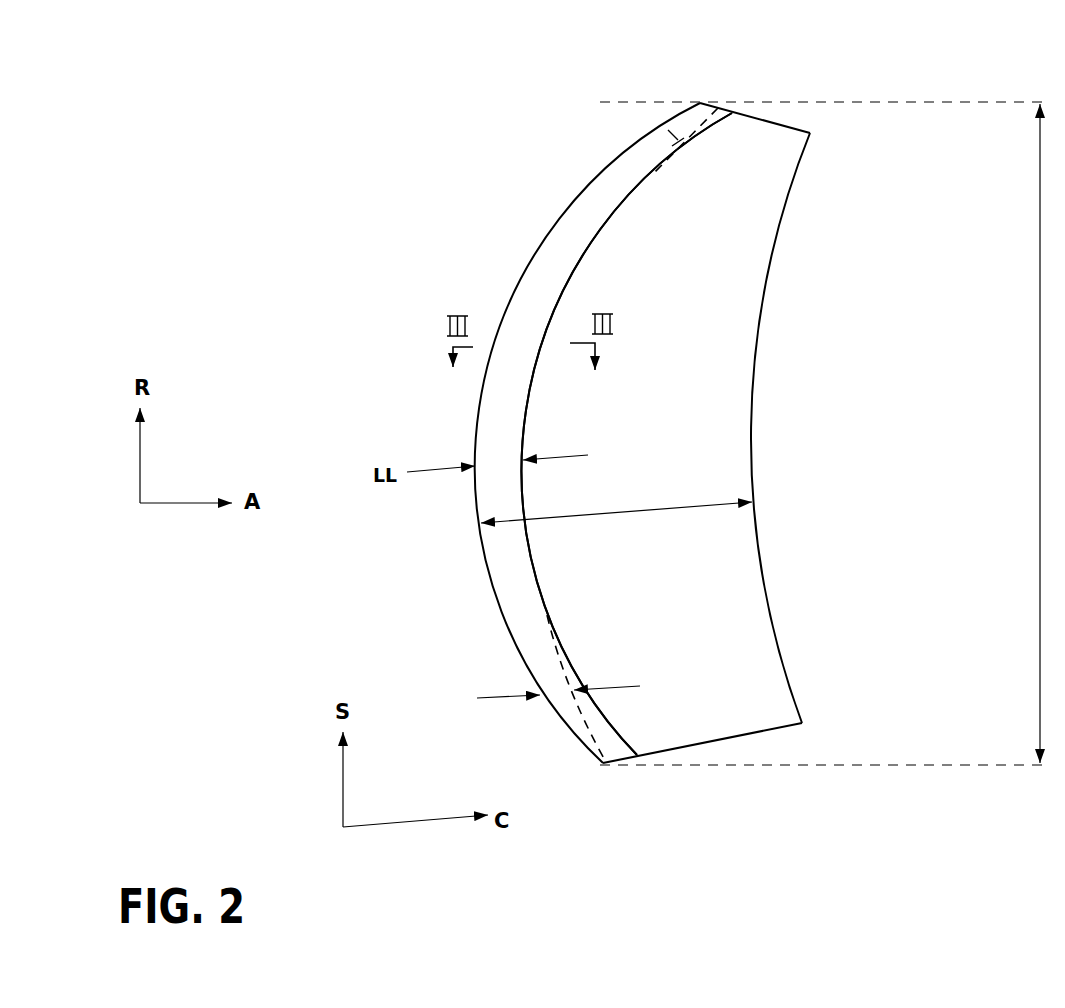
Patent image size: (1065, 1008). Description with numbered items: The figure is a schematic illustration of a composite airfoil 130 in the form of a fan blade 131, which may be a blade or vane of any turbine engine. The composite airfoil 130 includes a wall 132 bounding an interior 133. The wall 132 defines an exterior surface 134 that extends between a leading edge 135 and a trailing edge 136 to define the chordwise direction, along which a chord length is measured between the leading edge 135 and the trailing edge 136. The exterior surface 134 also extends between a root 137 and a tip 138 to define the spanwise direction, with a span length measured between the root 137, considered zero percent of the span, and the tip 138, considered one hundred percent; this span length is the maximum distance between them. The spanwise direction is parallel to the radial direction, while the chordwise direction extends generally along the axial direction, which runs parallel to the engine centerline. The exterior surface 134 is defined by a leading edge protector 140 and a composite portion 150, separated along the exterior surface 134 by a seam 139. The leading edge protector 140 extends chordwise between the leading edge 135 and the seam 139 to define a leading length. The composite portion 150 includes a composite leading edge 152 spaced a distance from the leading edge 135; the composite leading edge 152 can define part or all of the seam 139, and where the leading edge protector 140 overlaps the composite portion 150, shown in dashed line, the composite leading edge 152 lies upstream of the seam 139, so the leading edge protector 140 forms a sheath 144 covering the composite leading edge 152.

The composite airfoil 130 is at (232, 119).
The fan blade 131 is at (757, 84).
The wall 132 is at (723, 263).
The interior 133 is at (700, 585).
The exterior surface 134 is at (653, 406).
The leading edge 135 is at (480, 405).
The trailing edge 136 is at (753, 365).
The root 137 is at (770, 732).
The tip 138 is at (777, 123).
The seam 139 is at (523, 549).
The leading edge protector 140 is at (530, 312).
The sheath 144 is at (571, 434).
The composite portion 150 is at (692, 330).
The composite leading edge 152 is at (660, 127).